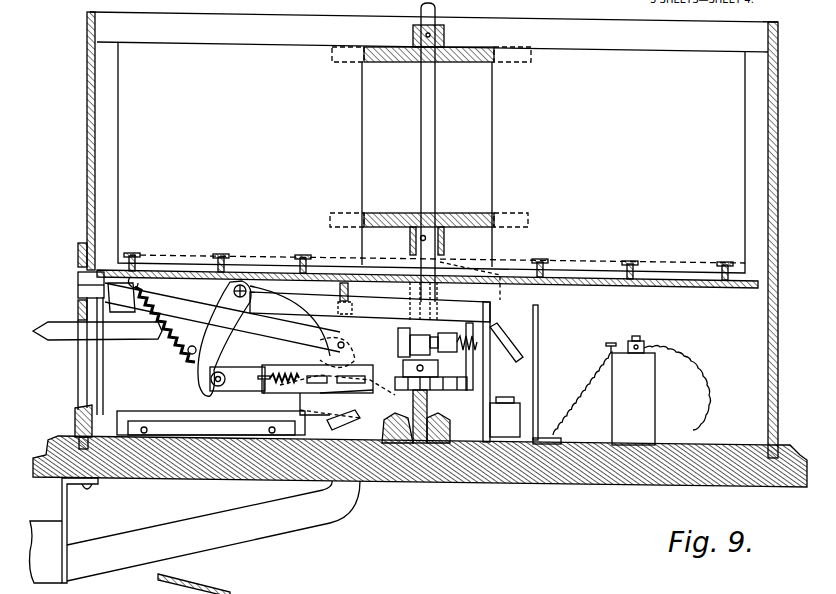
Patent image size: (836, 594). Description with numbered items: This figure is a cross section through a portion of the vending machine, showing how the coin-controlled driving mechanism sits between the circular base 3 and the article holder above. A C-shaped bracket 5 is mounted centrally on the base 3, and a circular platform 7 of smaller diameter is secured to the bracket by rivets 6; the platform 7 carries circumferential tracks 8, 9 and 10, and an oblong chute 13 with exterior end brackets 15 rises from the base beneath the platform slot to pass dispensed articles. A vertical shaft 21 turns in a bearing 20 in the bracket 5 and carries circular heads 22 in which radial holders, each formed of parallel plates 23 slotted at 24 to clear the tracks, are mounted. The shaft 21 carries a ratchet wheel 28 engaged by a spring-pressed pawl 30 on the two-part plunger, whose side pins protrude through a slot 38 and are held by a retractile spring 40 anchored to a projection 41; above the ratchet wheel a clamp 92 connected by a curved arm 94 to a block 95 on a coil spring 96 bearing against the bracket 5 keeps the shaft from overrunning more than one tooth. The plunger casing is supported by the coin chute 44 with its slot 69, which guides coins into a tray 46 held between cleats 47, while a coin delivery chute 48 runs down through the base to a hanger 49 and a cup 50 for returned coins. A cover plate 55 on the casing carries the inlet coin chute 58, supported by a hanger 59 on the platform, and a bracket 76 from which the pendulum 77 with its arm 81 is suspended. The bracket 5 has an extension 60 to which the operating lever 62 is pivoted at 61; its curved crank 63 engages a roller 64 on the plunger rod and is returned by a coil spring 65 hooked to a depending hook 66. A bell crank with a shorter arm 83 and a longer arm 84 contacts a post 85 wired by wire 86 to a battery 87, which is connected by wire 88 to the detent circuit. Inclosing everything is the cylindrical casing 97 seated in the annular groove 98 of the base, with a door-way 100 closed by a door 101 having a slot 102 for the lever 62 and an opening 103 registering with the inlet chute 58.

The circular base 3 is at (640, 487).
The C-shaped bracket 5 is at (520, 375).
The rivets 6 is at (340, 300).
The circular platform 7 is at (680, 283).
The track 8 is at (726, 262).
The track 9 is at (632, 261).
The track 10 is at (545, 283).
The oblong chute 13 is at (400, 288).
The exterior end brackets 15 is at (398, 342).
The bearing 20 is at (415, 445).
The vertical shaft 21 is at (435, 150).
The circular heads 22 is at (458, 62).
The parallel plates 23 is at (431, 157).
The slots 24 is at (303, 255).
The ratchet wheel 28 is at (434, 415).
The spring-pressed pawl 30 is at (395, 380).
The slot 38 is at (303, 365).
The retractile spring 40 is at (282, 374).
The projection 41 is at (264, 394).
The coin chute 44 is at (372, 402).
The tray 46 is at (150, 411).
The cleats 47 is at (215, 434).
The coin delivery chute 48 is at (213, 531).
The hanger 49 is at (67, 500).
The cup 50 is at (46, 555).
The cover plate 55 is at (258, 365).
The inlet coin chute 58 is at (234, 438).
The hanger 59 is at (121, 297).
The extension 60 is at (427, 284).
The pivot 61 is at (243, 285).
The operating lever 62 is at (97, 331).
The curved crank 63 is at (208, 368).
The roller 64 is at (222, 392).
The coil spring 65 is at (160, 345).
The depending hook 66 is at (140, 277).
The slot 69 is at (350, 420).
The bracket 76 is at (344, 343).
The pendulum 77 is at (336, 346).
The arm 81 is at (340, 360).
The shorter arm 83 is at (455, 265).
The longer arm 84 is at (512, 338).
The post 85 is at (538, 355).
The wire 86 is at (582, 388).
The battery 87 is at (633, 390).
The wire 88 is at (693, 356).
The clamp 92 is at (412, 336).
The curved arm 94 is at (447, 336).
The block 95 is at (457, 354).
The coil spring 96 is at (475, 356).
The cylindrical metallic casing 97 is at (790, 293).
The annular groove 98 is at (780, 440).
The door-way 100 is at (97, 390).
The door 101 is at (78, 252).
The slot 102 is at (78, 376).
The opening 103 is at (78, 288).